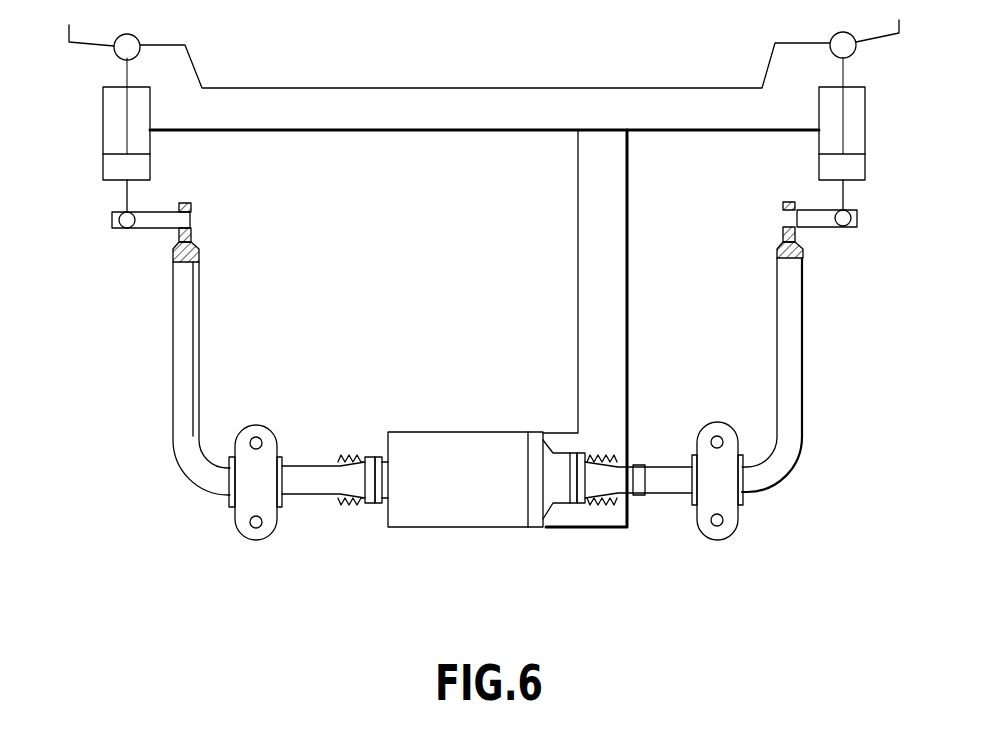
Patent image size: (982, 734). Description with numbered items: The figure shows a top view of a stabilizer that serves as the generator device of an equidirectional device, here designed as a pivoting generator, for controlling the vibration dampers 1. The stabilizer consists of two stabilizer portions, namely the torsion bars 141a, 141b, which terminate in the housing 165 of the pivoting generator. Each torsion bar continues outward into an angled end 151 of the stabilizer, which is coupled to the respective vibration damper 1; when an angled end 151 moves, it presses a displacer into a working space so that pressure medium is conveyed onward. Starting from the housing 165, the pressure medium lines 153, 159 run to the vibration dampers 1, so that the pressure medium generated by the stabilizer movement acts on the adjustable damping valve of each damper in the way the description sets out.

The vibration damper 1 is at (101, 131).
The pressure medium line 153 is at (698, 134).
The pressure medium line 159 is at (575, 289).
The angled end 151 is at (200, 323).
The torsion bar 141a is at (305, 480).
The torsion bar 141b is at (672, 482).
The housing 165 is at (478, 535).